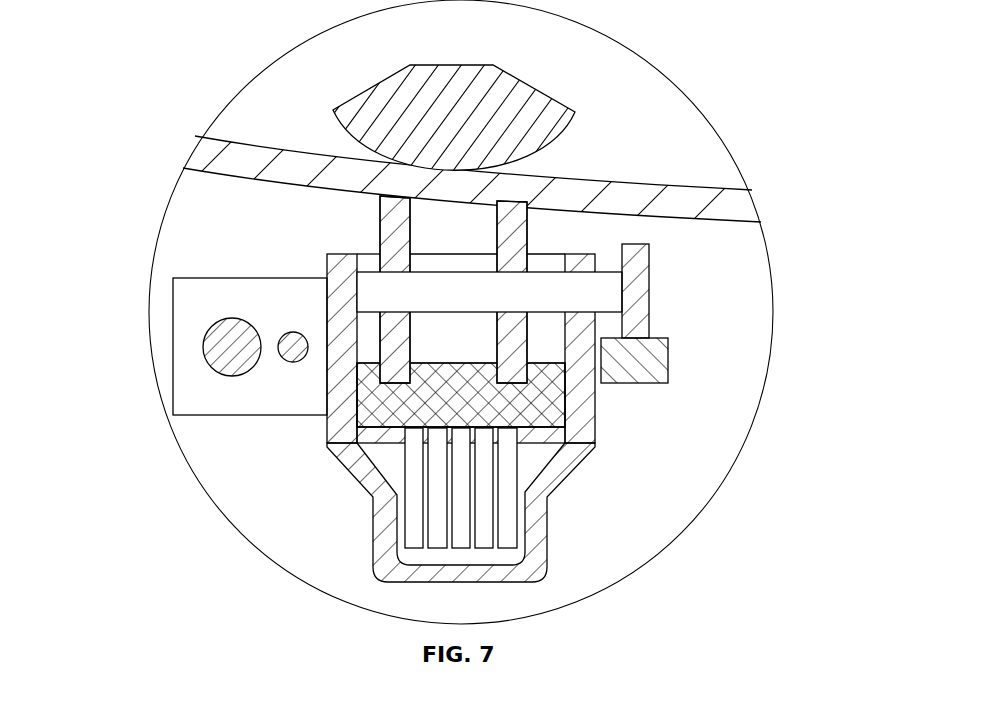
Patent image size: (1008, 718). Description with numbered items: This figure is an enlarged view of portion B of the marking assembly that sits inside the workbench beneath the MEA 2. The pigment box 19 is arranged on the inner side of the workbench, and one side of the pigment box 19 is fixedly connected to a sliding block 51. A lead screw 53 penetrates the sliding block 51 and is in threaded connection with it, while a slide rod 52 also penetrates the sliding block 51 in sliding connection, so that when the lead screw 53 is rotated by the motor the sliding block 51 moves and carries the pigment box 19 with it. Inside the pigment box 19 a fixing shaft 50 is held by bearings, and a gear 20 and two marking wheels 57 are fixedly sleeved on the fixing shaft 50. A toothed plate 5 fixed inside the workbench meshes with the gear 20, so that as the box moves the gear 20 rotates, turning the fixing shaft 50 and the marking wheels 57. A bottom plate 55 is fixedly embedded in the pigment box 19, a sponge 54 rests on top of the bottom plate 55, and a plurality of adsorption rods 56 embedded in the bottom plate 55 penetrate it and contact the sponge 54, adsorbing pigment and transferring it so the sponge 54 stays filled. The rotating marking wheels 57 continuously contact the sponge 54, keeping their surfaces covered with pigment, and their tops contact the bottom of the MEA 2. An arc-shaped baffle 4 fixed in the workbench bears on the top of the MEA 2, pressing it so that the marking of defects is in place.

The portion B is at (401, 312).
The MEA 2 is at (409, 162).
The arc-shaped baffle 4 is at (339, 112).
The marking wheel 57 is at (278, 258).
The pigment box 19 is at (312, 378).
The fixing shaft 50 is at (326, 262).
The sliding block 51 is at (178, 330).
The slide rod 52 is at (169, 326).
The lead screw 53 is at (145, 347).
The sponge 54 is at (297, 395).
The bottom plate 55 is at (297, 427).
The adsorption rod 56 is at (273, 488).
The gear 20 is at (757, 291).
The toothed plate 5 is at (746, 357).